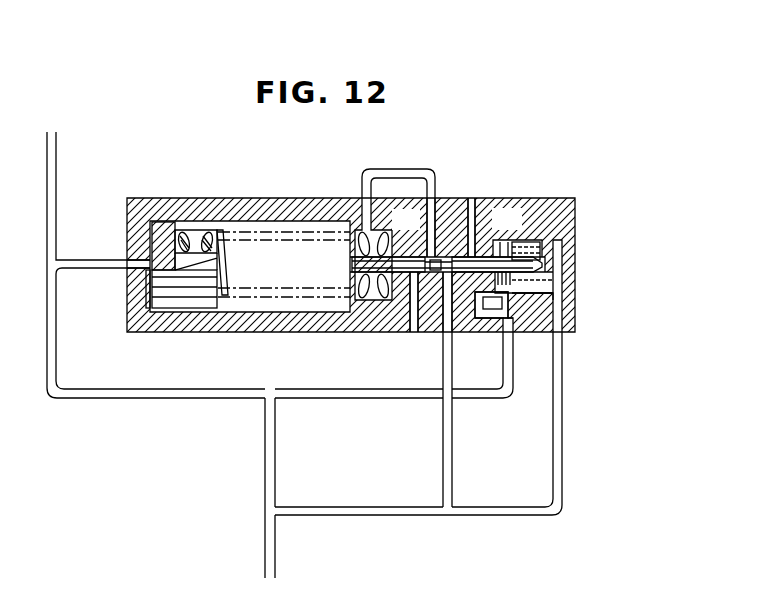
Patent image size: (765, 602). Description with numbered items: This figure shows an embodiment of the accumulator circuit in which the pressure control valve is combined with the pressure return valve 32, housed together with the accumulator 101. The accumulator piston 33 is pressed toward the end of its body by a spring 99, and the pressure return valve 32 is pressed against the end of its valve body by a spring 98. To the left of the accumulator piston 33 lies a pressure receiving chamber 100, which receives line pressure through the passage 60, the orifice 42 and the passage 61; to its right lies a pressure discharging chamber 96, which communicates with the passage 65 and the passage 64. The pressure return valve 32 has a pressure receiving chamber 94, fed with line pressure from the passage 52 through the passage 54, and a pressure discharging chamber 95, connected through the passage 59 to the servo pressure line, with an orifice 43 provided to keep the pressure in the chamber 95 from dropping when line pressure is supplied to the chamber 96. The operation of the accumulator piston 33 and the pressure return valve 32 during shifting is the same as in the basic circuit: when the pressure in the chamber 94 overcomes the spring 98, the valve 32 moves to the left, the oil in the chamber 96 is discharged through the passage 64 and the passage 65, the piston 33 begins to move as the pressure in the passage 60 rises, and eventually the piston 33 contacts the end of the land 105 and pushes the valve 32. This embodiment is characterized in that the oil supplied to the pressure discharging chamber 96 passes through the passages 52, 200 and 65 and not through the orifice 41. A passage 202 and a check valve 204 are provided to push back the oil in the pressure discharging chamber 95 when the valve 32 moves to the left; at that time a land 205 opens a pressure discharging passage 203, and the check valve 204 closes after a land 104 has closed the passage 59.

The pressure return valve 32 is at (424, 244).
The accumulator piston 33 is at (167, 226).
The orifice 41 is at (275, 434).
The orifice 42 is at (94, 240).
The orifice 43 is at (395, 171).
The passage 52 is at (273, 542).
The passage 54 is at (468, 516).
The passage 59 is at (327, 396).
The passage 60 is at (161, 396).
The passage 61 is at (117, 270).
The passage 64 is at (417, 333).
The passage 65 is at (433, 181).
The pressure receiving chamber 94 is at (557, 282).
The pressure discharging chamber 95 is at (500, 248).
The pressure discharging chamber 96 is at (330, 226).
The spring 98 is at (540, 258).
The spring 99 is at (221, 292).
The pressure receiving chamber 100 is at (146, 294).
The accumulator 101 is at (274, 210).
The land 104 is at (545, 302).
The land 105 is at (352, 262).
The passage 200 is at (450, 465).
The passage 202 is at (476, 318).
The pressure discharging passage 203 is at (470, 200).
The check valve 204 is at (510, 303).
The land 205 is at (457, 274).